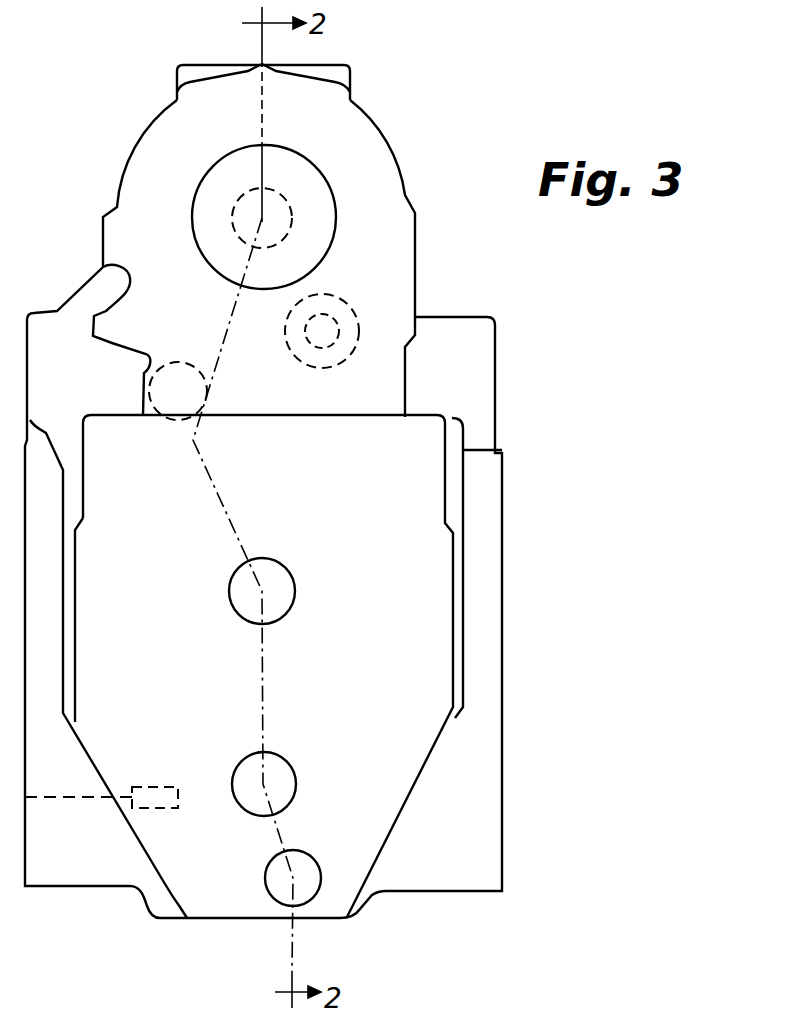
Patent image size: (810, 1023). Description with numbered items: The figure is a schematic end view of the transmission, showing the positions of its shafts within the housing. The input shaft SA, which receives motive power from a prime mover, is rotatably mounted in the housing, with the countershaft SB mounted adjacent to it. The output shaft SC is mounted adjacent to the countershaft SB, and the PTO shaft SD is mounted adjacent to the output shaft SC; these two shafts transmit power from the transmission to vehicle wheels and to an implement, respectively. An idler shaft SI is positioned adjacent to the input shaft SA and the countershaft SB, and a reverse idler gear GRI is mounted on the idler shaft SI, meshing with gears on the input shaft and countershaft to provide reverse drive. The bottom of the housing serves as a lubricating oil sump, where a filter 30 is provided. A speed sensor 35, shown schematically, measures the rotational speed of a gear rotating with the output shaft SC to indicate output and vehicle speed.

The input shaft SA is at (283, 192).
The countershaft SB is at (178, 360).
The output shaft SC is at (263, 558).
The PTO shaft SD is at (287, 759).
The idler shaft SI is at (323, 300).
The reverse idler gear GRI is at (319, 363).
The filter 30 is at (311, 849).
The speed sensor 35 is at (153, 787).